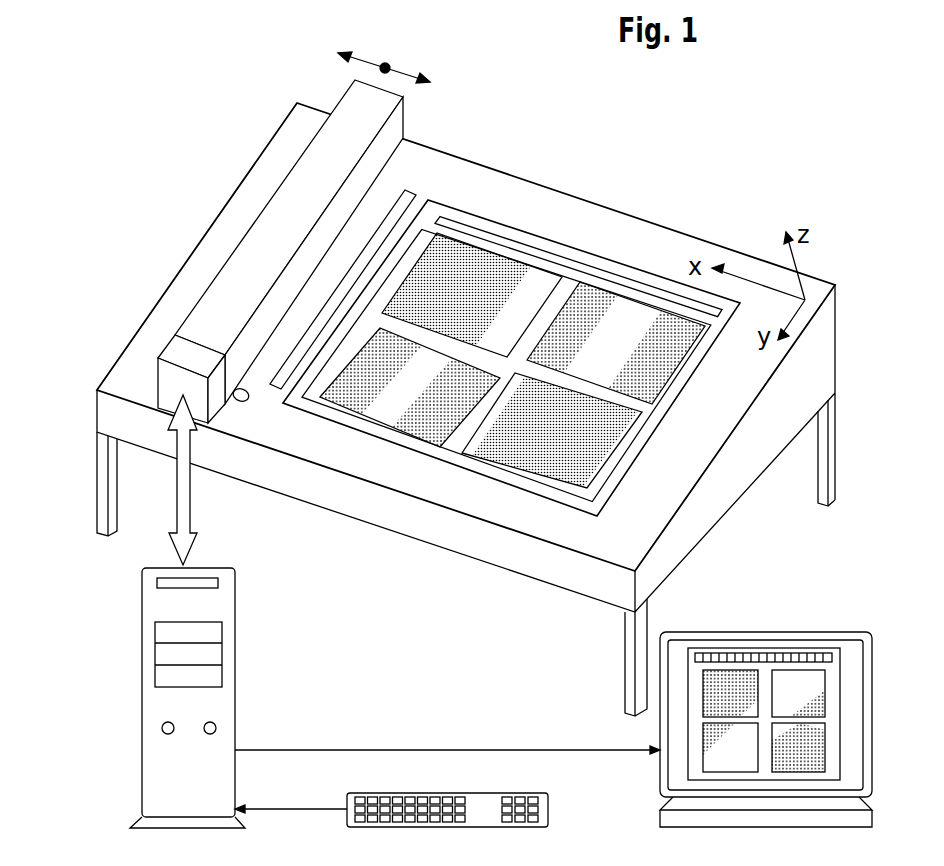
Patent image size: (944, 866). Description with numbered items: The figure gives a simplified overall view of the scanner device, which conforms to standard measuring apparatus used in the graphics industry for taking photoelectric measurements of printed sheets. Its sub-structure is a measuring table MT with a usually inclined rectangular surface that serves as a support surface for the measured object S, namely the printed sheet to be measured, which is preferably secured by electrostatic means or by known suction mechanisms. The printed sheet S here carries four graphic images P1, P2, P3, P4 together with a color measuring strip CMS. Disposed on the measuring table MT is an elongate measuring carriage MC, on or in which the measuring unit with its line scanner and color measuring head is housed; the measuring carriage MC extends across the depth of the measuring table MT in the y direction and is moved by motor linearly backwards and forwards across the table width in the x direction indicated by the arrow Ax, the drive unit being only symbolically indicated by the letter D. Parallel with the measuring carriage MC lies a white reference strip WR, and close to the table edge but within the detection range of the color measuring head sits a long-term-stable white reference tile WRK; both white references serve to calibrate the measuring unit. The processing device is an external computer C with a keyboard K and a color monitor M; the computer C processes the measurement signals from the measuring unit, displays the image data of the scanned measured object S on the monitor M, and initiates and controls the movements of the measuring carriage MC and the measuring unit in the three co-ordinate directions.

The measuring carriage MC is at (278, 220).
The drive unit D is at (180, 358).
The arrow indicating x-direction movement Ax is at (390, 63).
The white reference strip WR is at (407, 193).
The graphic image P1 is at (500, 277).
The graphic image P2 is at (677, 357).
The graphic image P3 is at (380, 420).
The graphic image P4 is at (563, 477).
The color measuring strip CMS is at (537, 248).
The measured object S is at (657, 405).
The measuring table MT is at (680, 468).
The white reference tile WRK is at (243, 401).
The computer C is at (218, 610).
The keyboard K is at (547, 812).
The color monitor M is at (765, 647).